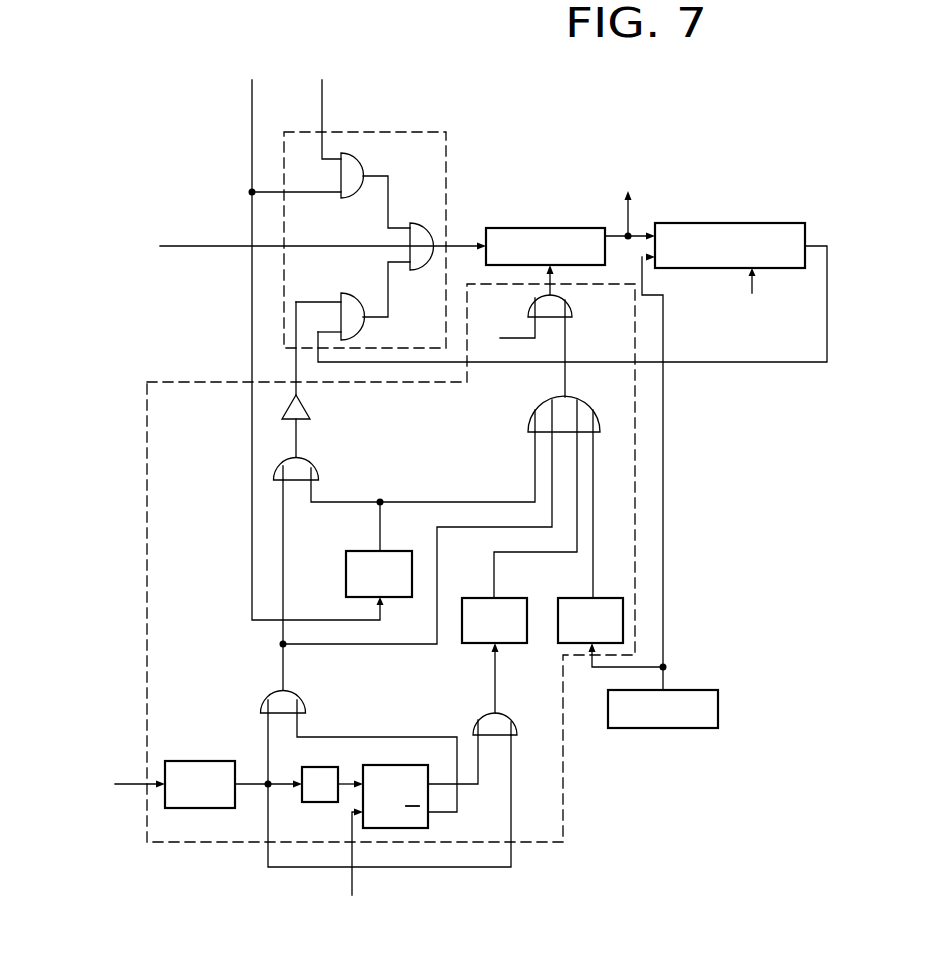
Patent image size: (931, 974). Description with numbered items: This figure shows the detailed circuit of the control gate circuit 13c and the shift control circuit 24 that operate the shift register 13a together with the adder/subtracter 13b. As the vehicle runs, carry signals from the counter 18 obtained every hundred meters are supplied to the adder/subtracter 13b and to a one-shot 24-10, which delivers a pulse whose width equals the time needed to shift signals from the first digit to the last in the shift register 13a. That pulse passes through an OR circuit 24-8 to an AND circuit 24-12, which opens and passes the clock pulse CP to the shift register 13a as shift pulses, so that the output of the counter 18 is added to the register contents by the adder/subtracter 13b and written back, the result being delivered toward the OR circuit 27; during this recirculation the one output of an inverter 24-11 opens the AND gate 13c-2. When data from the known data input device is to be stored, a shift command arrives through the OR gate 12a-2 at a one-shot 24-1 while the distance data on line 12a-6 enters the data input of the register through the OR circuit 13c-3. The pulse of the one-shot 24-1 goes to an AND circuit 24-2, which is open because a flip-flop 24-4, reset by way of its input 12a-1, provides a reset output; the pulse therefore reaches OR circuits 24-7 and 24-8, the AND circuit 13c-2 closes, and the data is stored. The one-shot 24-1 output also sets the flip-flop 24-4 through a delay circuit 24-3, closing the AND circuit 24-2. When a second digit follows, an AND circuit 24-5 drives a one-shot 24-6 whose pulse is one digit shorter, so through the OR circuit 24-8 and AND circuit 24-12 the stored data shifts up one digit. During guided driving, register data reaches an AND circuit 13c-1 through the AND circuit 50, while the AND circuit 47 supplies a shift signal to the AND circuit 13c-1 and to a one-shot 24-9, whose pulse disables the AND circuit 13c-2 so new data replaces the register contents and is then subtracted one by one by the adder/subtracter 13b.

The control gate circuit 13c is at (446, 152).
The AND circuit 13c-1 is at (363, 165).
The AND gate 13c-2 is at (355, 293).
The OR circuit 13c-3 is at (408, 237).
The shift register 13a is at (552, 228).
The adder/subtracter 13b is at (720, 270).
The OR circuit 27 is at (653, 179).
The AND circuit 47 is at (262, 318).
The AND circuit 50 is at (421, 87).
The data input line 12a-6 is at (275, 239).
The OR gate 12a-2 is at (101, 775).
The data input device element 12a-1 is at (350, 889).
The shift control circuit 24 is at (557, 797).
The one-shot 24-1 is at (195, 761).
The AND circuit 24-2 is at (303, 701).
The delay circuit 24-3 is at (333, 805).
The flip-flop 24-4 is at (402, 765).
The AND circuit 24-5 is at (471, 722).
The one-shot 24-6 is at (465, 644).
The OR circuit 24-7 is at (318, 463).
The OR circuit 24-8 is at (537, 405).
The one-shot 24-9 is at (356, 551).
The one-shot 24-10 is at (564, 598).
The inverter 24-11 is at (310, 406).
The AND circuit 24-12 is at (572, 314).
The counter 18 is at (720, 710).